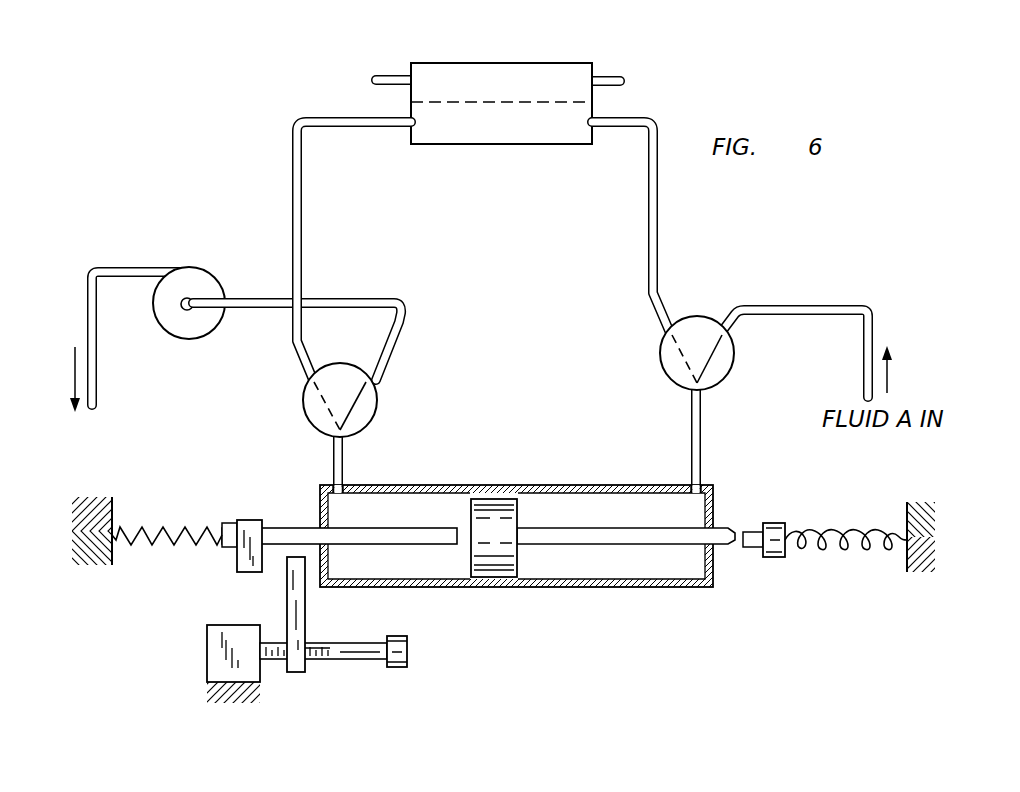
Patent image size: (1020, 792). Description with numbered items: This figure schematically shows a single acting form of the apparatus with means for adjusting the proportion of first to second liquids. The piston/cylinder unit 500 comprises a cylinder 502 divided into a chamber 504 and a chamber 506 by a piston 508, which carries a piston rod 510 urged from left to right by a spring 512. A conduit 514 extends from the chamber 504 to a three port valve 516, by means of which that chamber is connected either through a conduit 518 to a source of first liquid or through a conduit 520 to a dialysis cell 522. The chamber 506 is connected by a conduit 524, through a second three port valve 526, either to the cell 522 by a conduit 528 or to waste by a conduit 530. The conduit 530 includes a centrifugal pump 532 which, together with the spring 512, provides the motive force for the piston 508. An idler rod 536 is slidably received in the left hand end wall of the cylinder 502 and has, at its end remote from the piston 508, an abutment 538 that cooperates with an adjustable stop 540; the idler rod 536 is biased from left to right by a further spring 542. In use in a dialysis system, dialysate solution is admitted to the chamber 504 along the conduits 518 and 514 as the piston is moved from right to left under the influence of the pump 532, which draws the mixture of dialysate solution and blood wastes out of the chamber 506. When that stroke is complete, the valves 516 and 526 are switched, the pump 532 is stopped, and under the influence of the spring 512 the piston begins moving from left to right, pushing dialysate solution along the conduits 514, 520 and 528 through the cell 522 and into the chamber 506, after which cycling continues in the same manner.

The piston/cylinder unit 500 is at (502, 535).
The cylinder 502 is at (516, 534).
The chamber 504 is at (555, 568).
The chamber 506 is at (352, 568).
The piston 508 is at (495, 510).
The piston rod 510 is at (722, 547).
The spring 512 is at (808, 535).
The conduit 514 is at (702, 438).
The three port valve 516 is at (740, 364).
The conduit 518 is at (784, 305).
The conduit 520 is at (660, 220).
The dialysis cell 522 is at (570, 63).
The conduit 524 is at (344, 462).
The three port valve 526 is at (382, 404).
The conduit 528 is at (303, 229).
The conduit 530 is at (367, 297).
The centrifugal pump 532 is at (210, 258).
The idler rod 536 is at (428, 540).
The abutment 538 is at (248, 520).
The adjustable stop 540 is at (296, 673).
The spring 542 is at (128, 530).